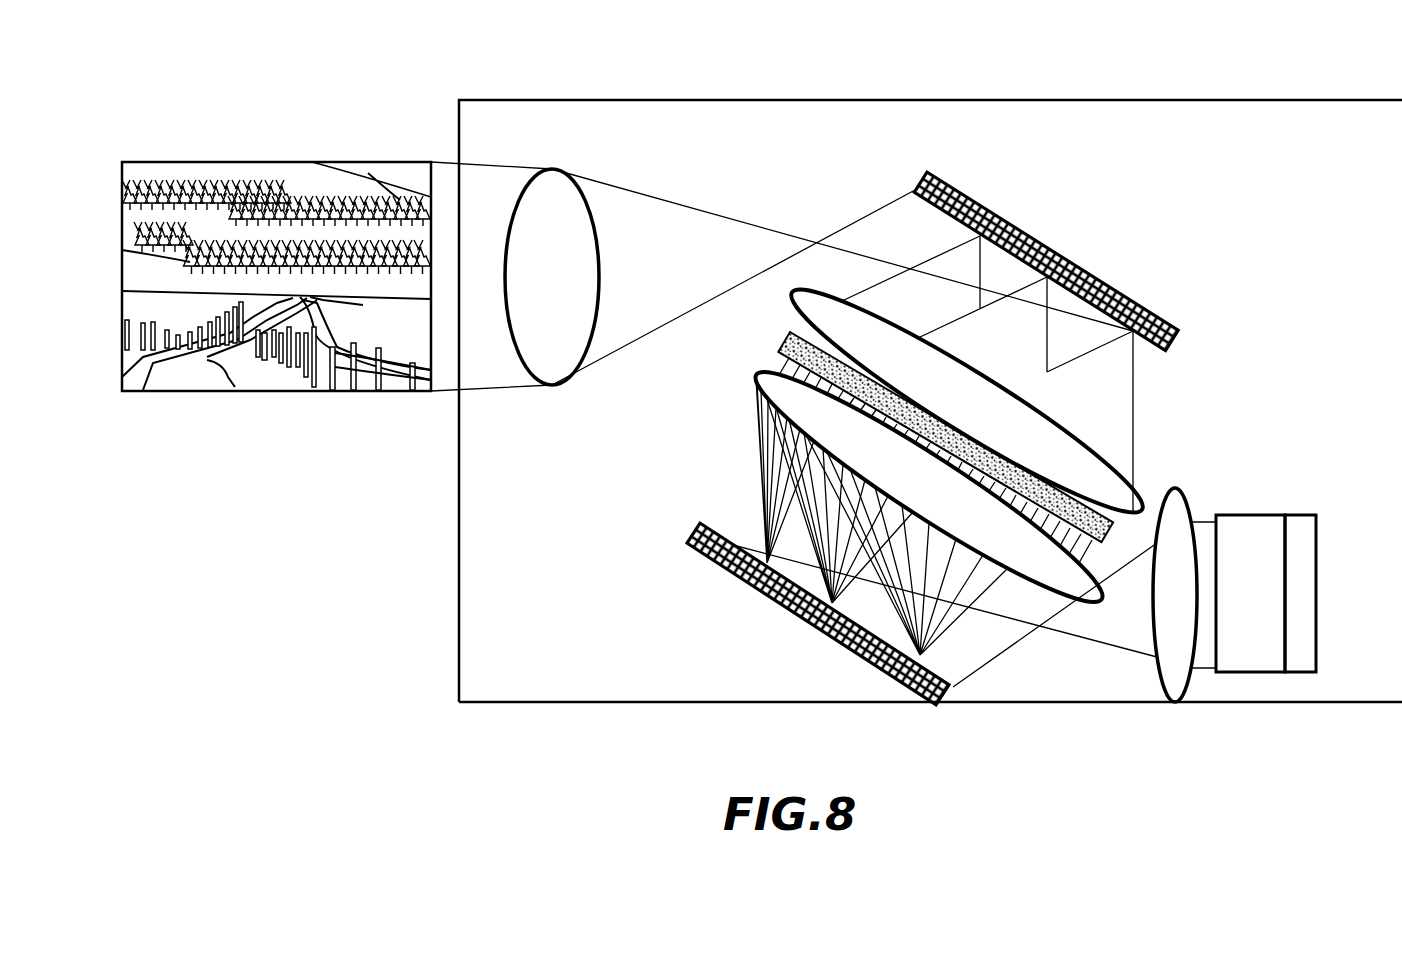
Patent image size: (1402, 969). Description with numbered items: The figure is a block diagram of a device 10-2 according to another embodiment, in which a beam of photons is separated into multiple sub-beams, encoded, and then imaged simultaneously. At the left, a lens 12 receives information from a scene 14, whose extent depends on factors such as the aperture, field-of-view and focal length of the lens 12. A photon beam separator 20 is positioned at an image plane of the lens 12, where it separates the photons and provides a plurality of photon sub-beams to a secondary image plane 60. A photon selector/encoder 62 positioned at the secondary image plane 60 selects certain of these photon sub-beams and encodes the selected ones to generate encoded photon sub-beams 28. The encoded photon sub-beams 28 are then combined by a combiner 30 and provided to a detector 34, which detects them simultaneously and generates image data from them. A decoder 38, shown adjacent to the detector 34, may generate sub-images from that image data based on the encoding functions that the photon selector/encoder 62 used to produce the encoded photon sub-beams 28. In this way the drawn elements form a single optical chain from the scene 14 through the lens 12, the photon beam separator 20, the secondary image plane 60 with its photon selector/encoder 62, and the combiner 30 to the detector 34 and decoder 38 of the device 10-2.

The device 10-2 is at (1264, 100).
The scene 14 is at (273, 162).
The lens 12 is at (552, 178).
The photon beam separator 20 is at (1050, 250).
The secondary image plane 60 is at (780, 333).
The photon selector/encoder 62 is at (780, 338).
The encoded photon sub-beams 28 is at (770, 360).
The combiner 30 is at (777, 598).
The detector 34 is at (1272, 604).
The decoder 38 is at (1305, 553).